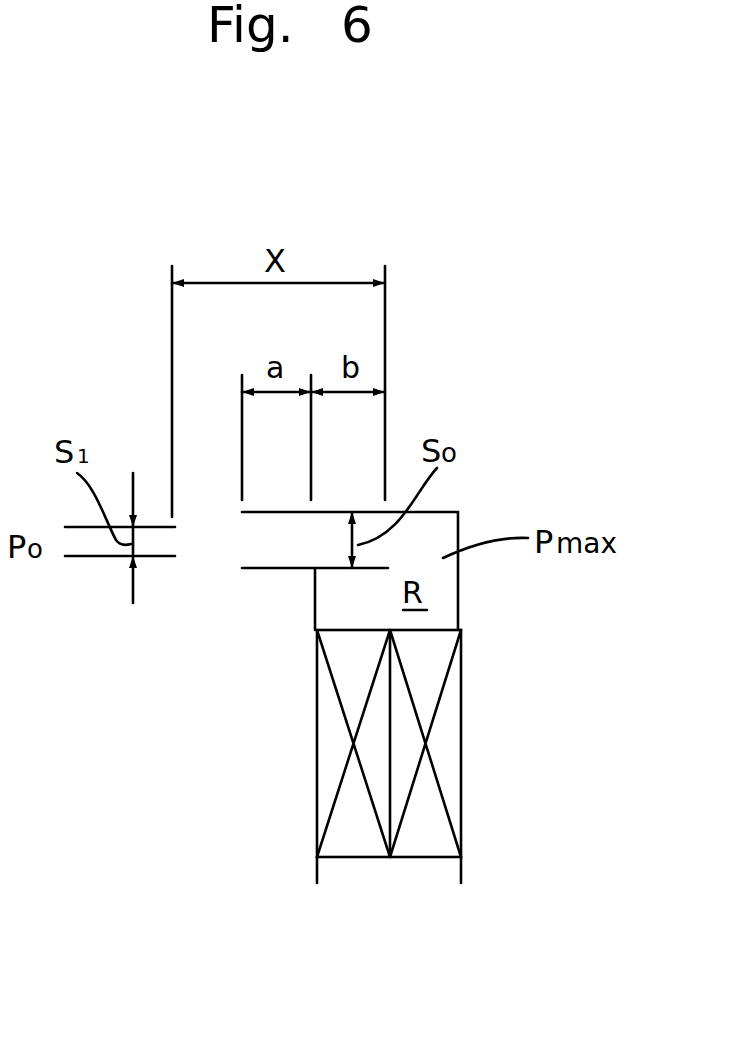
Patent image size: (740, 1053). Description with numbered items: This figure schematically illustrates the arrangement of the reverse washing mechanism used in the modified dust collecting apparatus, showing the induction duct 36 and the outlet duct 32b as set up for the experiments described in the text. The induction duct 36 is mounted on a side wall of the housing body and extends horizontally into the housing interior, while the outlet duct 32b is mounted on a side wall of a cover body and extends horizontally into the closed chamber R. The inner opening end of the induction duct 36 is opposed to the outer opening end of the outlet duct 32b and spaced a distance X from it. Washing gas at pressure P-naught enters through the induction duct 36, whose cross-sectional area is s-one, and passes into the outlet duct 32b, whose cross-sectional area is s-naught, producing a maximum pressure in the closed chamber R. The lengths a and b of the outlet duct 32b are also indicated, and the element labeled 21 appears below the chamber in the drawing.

The induction duct 36 is at (93, 557).
The outlet duct 32b is at (267, 569).
The coil 21 is at (330, 785).